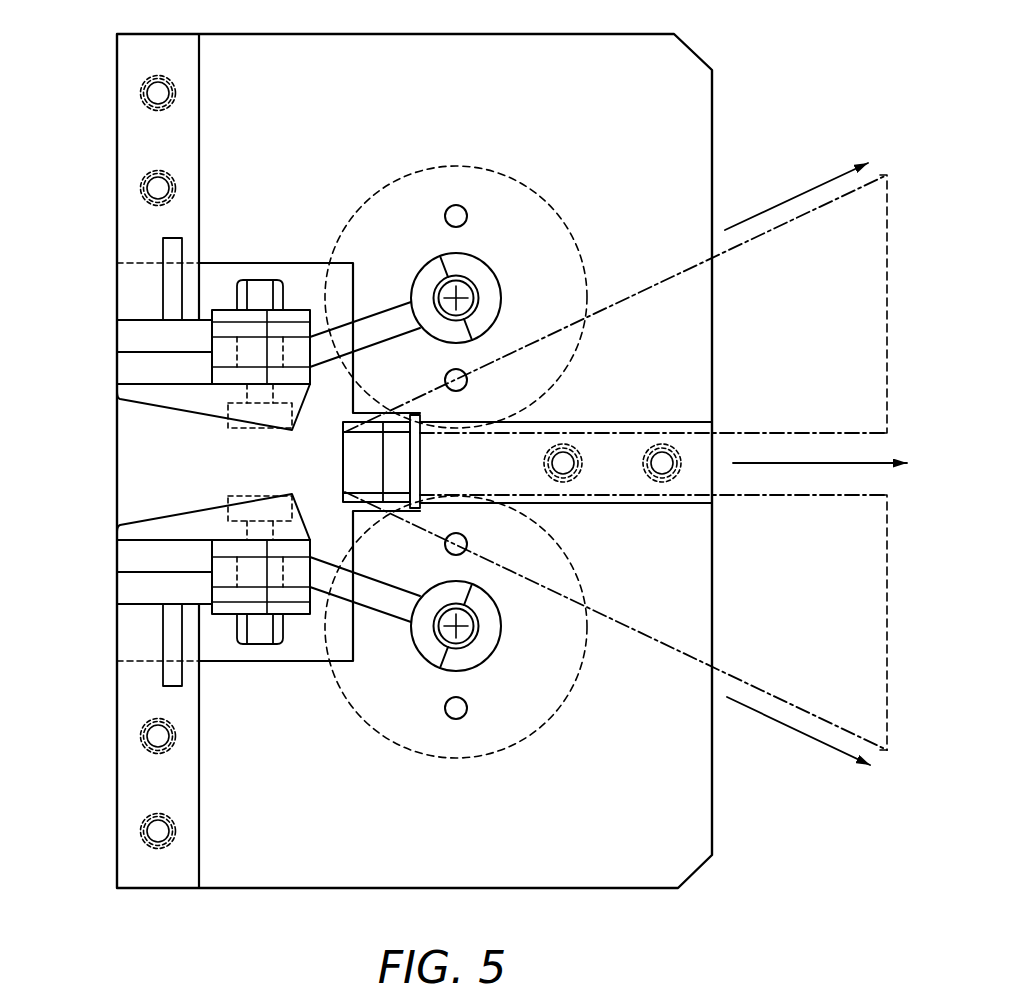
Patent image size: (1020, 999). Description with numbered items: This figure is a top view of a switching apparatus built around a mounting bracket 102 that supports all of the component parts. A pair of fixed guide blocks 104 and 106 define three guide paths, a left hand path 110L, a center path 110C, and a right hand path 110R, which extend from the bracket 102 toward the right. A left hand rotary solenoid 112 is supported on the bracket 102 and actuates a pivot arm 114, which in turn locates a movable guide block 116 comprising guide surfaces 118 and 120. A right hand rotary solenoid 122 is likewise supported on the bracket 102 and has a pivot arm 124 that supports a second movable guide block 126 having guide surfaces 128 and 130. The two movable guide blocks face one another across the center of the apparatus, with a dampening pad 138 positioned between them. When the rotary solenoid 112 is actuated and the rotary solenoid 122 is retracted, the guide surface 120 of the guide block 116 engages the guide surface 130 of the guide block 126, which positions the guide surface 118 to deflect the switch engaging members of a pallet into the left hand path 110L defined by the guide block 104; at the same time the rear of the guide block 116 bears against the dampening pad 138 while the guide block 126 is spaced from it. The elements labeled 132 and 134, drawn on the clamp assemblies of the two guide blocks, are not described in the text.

The mounting bracket 102 is at (655, 807).
The guide block 104 is at (840, 315).
The guide block 106 is at (829, 600).
The left hand guide path 110L is at (787, 200).
The center guide path 110C is at (853, 462).
The right hand guide path 110R is at (787, 728).
The left hand rotary solenoid 112 is at (532, 228).
The pivot arm 114 is at (387, 318).
The guide block 116 is at (133, 400).
The guide surface 118 is at (153, 380).
The guide surface 120 is at (158, 410).
The right hand rotary solenoid 122 is at (533, 697).
The pivot arm 124 is at (387, 607).
The guide block 126 is at (133, 522).
The guide surface 128 is at (153, 542).
The guide surface 130 is at (158, 515).
The upper clamp plate 132 is at (152, 357).
The lower clamp plate 134 is at (153, 567).
The dampening pad 138 is at (343, 478).